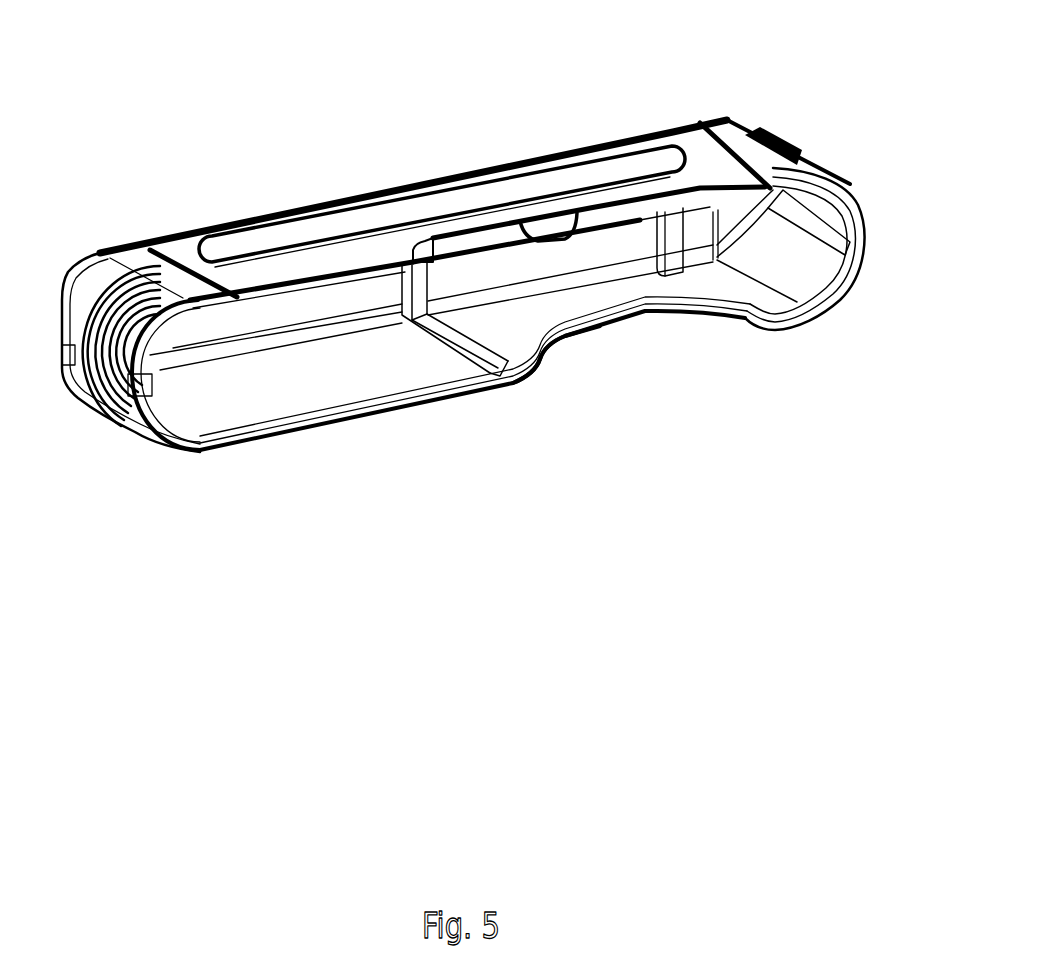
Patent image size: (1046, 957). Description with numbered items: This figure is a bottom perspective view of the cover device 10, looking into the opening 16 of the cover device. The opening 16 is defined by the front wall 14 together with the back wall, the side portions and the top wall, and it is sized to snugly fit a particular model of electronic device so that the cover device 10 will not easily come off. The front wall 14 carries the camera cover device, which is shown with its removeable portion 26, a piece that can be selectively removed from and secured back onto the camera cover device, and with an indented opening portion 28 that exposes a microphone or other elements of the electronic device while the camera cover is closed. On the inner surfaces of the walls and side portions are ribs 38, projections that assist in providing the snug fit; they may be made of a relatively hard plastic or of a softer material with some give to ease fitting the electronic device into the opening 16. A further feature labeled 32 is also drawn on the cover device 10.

The cover device 10 is at (463, 284).
The front wall 14 is at (150, 248).
The opening 16 is at (290, 382).
The removeable portion 26 is at (507, 192).
The indented opening portion 28 is at (458, 232).
The notch 32 is at (545, 338).
The ribs 38 is at (463, 340).